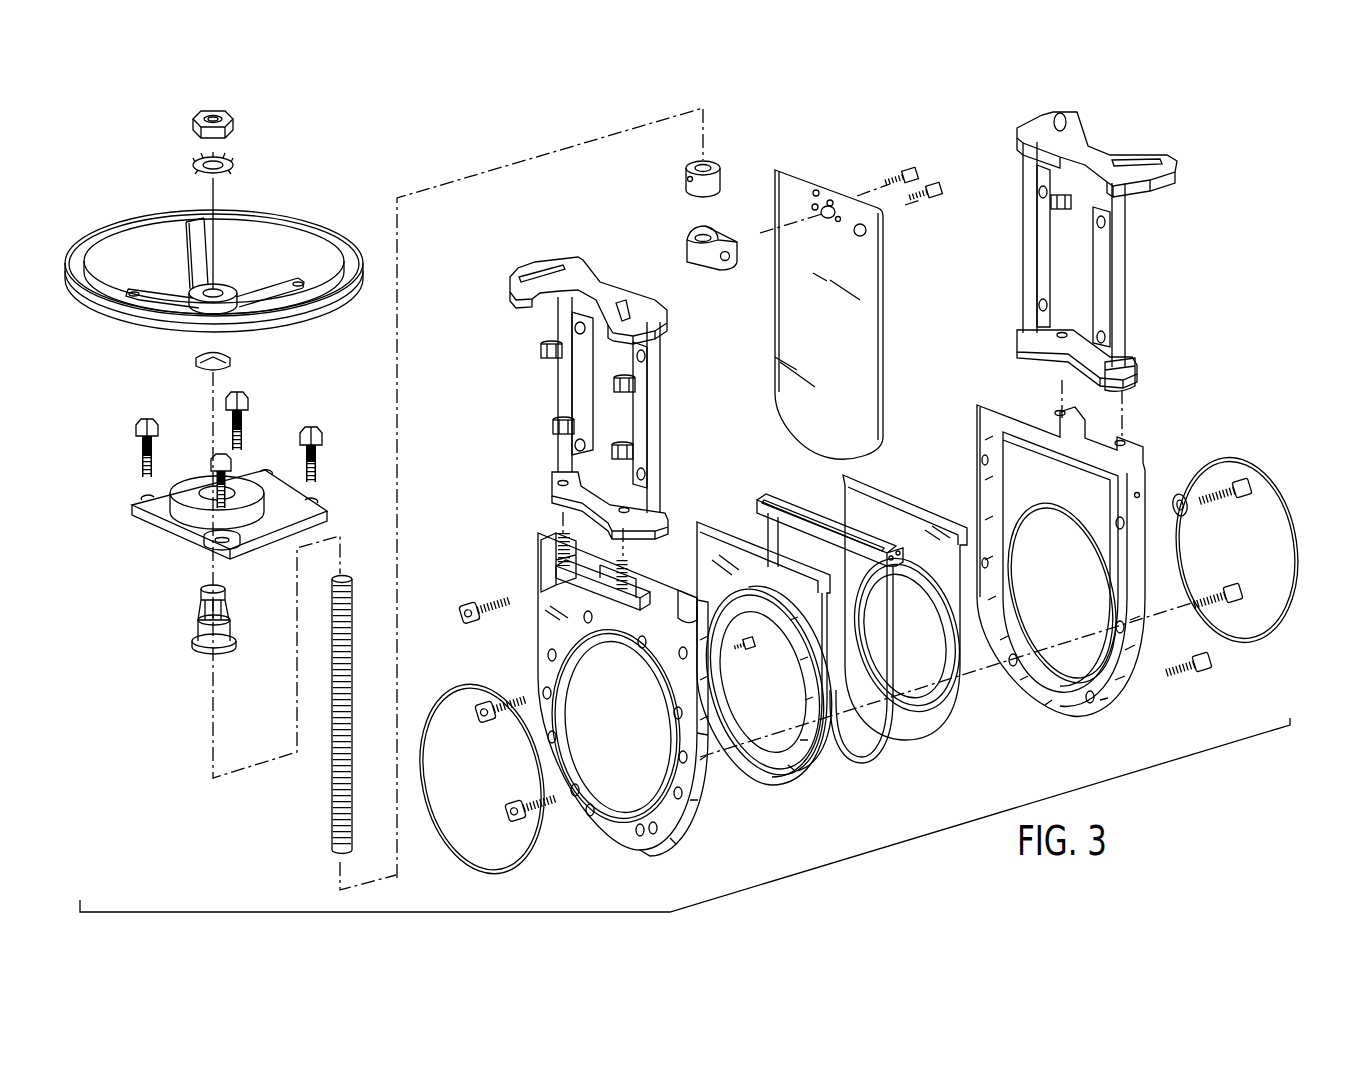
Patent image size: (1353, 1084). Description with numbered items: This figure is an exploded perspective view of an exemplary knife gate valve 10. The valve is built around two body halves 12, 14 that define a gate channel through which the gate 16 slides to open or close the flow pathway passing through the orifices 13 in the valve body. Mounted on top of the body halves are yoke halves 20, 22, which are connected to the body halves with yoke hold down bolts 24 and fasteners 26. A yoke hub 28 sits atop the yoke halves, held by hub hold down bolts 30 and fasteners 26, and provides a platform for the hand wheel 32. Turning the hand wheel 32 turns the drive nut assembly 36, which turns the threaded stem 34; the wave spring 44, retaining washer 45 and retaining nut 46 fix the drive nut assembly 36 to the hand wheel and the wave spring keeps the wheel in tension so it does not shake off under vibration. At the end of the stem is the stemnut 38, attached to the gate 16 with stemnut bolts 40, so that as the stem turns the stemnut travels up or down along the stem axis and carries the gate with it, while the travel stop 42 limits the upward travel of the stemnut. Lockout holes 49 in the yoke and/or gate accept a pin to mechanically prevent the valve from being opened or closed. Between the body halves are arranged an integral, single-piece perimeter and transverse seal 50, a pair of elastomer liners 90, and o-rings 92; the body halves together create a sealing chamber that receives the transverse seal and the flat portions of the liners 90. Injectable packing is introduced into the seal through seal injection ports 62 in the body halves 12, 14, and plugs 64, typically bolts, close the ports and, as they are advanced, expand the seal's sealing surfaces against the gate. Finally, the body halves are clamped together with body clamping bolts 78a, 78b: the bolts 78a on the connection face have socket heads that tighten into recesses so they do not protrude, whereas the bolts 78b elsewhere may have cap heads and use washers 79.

The knife gate valve 10 is at (1227, 202).
The body half 12 is at (538, 635).
The orifices 13 is at (640, 792).
The body half 14 is at (977, 433).
The gate 16 is at (859, 314).
The yoke half 20 is at (552, 477).
The yoke half 22 is at (1128, 260).
The yoke hold down bolts 24 is at (557, 550).
The fasteners 26 is at (540, 352).
The yoke hub 28 is at (160, 530).
The hub hold down bolts 30 is at (137, 442).
The hand wheel 32 is at (313, 227).
The threaded stem 34 is at (330, 786).
The drive nut assembly 36 is at (195, 623).
The stemnut 38 is at (687, 257).
The stemnut bolts 40 is at (907, 167).
The travel stop 42 is at (725, 180).
The wave spring 44 is at (228, 357).
The retaining washer 45 is at (238, 166).
The retaining nut 46 is at (233, 117).
The lockout holes 49 is at (866, 238).
The integral, single-piece perimeter and transverse seal 50 is at (803, 497).
The seal injection ports 62 is at (682, 592).
The plugs 64 is at (750, 650).
The body clamping bolts 78a is at (1197, 677).
The body clamping bolts 78b is at (1250, 497).
The washers 79 is at (1178, 493).
The elastomer liners 90 is at (717, 525).
The o-rings 92 is at (440, 690).